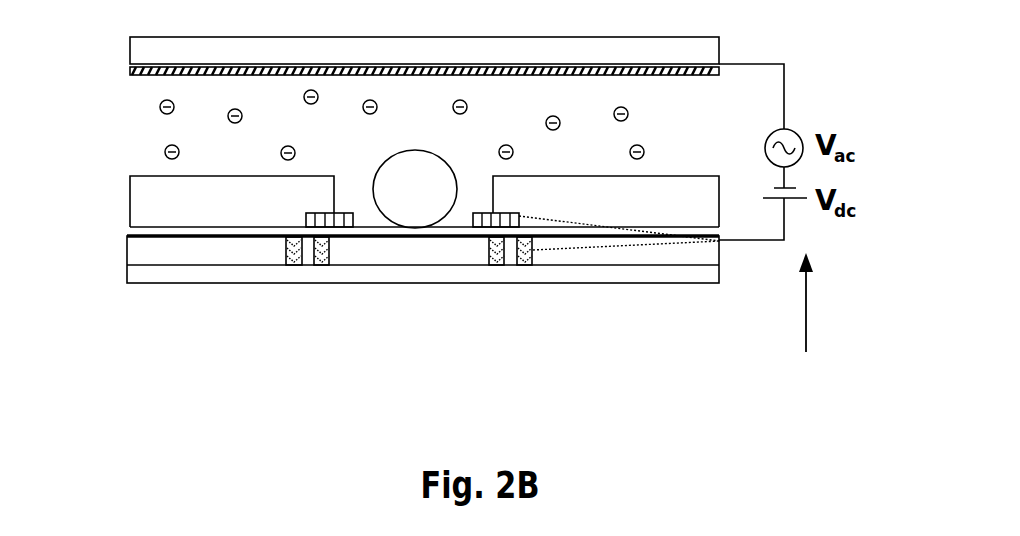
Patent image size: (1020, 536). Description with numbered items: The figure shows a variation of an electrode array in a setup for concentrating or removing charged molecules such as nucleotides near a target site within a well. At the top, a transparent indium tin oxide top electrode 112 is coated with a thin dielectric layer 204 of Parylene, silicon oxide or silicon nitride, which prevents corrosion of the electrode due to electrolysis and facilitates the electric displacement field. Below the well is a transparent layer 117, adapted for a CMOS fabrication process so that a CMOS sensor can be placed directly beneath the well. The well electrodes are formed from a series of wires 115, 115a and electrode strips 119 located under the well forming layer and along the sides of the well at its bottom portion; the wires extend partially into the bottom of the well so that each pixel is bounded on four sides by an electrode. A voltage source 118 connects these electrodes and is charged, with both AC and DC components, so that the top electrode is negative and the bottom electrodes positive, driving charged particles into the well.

The top electrode 112 is at (138, 63).
The dielectric layer 204 is at (138, 75).
The wires 115 is at (287, 251).
The electrode strips 119 is at (330, 228).
The transparent layer 117 is at (398, 252).
The wires 115a is at (489, 251).
The voltage source 118 is at (808, 320).